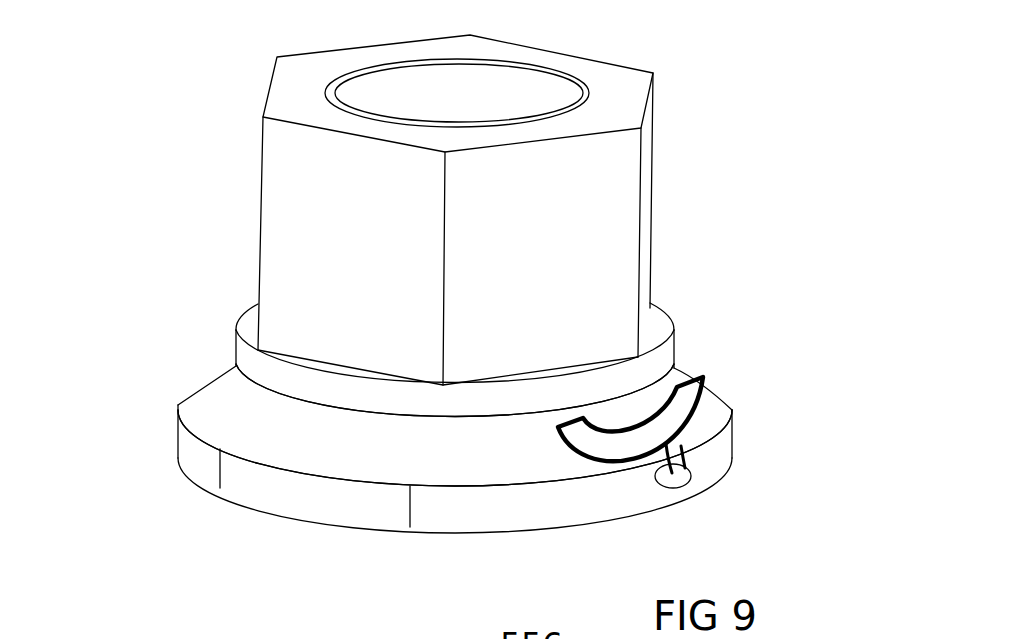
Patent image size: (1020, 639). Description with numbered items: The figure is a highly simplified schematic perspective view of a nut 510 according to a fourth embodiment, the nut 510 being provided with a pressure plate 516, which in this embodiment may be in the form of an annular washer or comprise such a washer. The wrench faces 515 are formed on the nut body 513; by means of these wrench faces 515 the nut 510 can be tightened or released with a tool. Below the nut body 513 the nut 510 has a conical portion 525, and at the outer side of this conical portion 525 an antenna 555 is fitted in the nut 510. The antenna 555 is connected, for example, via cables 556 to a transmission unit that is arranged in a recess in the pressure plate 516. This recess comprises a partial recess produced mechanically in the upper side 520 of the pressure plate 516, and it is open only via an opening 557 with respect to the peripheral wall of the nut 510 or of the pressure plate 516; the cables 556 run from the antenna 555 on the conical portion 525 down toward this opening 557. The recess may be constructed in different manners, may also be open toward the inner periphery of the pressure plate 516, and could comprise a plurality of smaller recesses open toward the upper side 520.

The nut 510 is at (188, 261).
The nut body 513 is at (694, 246).
The wrench faces 515 is at (650, 188).
The pressure plate 516 is at (150, 449).
The upper side 520 is at (390, 483).
The conical portion 525 is at (220, 408).
The antenna 555 is at (683, 407).
The cables 556 is at (664, 456).
The opening 557 is at (692, 477).